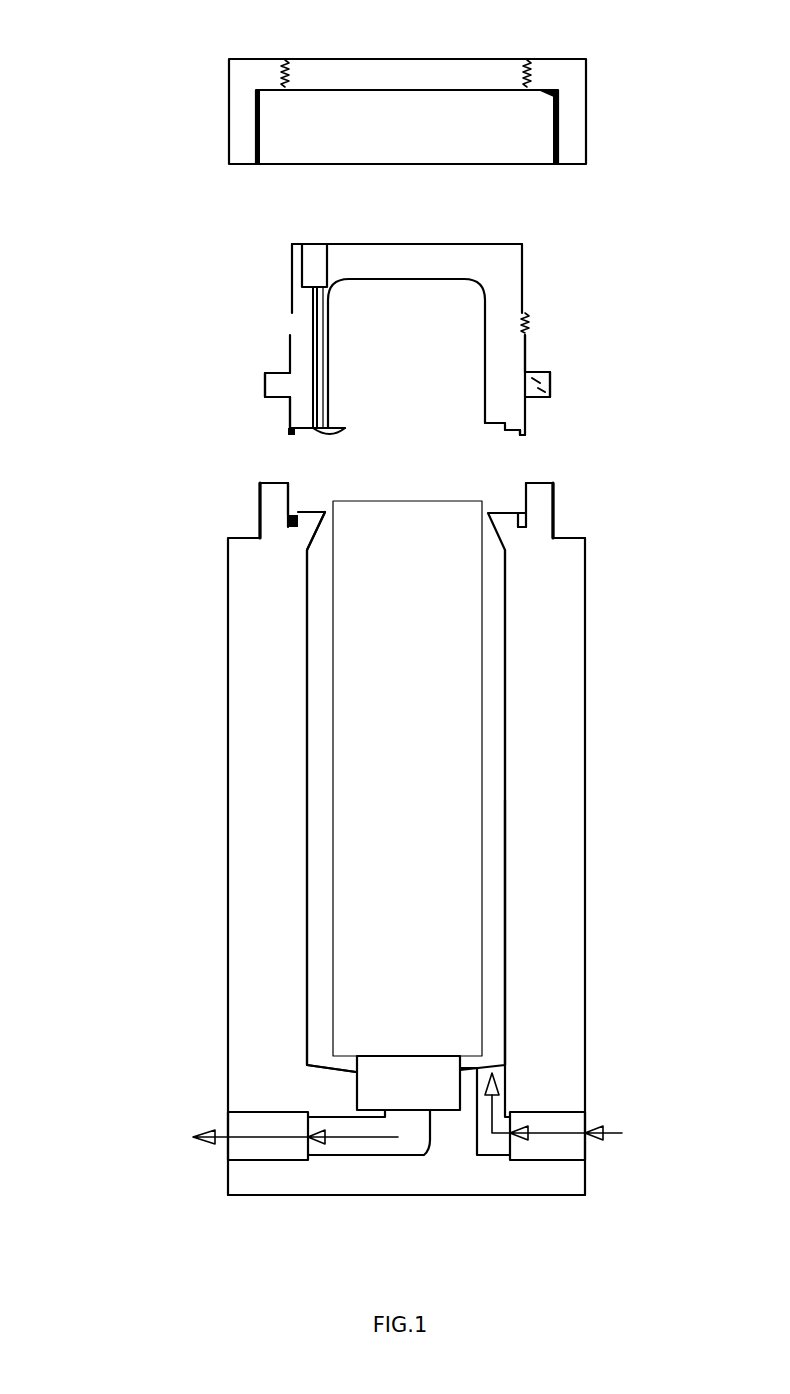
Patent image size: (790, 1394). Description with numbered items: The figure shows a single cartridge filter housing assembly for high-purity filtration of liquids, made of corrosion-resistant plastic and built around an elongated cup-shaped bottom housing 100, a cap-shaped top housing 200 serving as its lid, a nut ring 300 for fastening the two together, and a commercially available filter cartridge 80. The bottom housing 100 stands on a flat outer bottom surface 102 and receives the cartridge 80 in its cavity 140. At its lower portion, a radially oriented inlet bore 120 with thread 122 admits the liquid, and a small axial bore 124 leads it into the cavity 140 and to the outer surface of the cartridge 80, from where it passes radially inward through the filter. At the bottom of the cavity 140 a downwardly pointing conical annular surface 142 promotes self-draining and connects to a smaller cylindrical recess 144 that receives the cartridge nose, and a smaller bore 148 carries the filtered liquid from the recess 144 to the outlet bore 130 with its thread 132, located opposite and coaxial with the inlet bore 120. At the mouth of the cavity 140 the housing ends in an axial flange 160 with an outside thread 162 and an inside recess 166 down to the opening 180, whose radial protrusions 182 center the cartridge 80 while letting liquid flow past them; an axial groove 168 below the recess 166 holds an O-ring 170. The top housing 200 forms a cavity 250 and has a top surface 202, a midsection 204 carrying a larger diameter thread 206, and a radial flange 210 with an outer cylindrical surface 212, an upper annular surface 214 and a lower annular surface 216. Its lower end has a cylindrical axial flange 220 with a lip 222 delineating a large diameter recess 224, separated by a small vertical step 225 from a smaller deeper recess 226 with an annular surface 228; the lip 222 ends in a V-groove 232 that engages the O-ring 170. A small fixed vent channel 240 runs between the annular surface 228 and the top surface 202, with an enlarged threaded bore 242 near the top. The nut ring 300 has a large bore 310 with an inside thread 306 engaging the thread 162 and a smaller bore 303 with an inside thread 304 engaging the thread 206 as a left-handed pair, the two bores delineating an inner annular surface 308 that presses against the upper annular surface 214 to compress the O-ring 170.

The bottom housing 100 is at (265, 823).
The flat outer bottom surface 102 is at (485, 1195).
The filter cartridge 80 is at (455, 930).
The inlet bore 120 is at (578, 1123).
The thread 122 is at (565, 1158).
The axial bore 124 is at (502, 1098).
The outlet bore 130 is at (238, 1127).
The thread 132 is at (243, 1157).
The cavity 140 is at (490, 985).
The conical annular surface 142 is at (320, 1068).
The recess 144 is at (365, 1098).
The bore 148 is at (412, 1145).
The axial flange 160 is at (540, 483).
The outside thread 162 is at (556, 512).
The inside recess 166 is at (516, 500).
The axial groove 168 is at (290, 514).
The O-ring 170 is at (295, 515).
The opening 180 is at (429, 525).
The radial protrusions 182 is at (313, 520).
The top housing 200 is at (386, 258).
The top surface 202 is at (425, 243).
The midsection 204 is at (527, 340).
The thread 206 is at (527, 312).
The radial flange 210 is at (530, 372).
The outer cylindrical surface 212 is at (548, 384).
The upper annular surface 214 is at (538, 380).
The lower annular surface 216 is at (550, 388).
The axial flange 220 is at (288, 405).
The lip 222 is at (290, 427).
The recess 224 is at (520, 436).
The vertical step 225 is at (340, 436).
The recess 226 is at (493, 425).
The annular surface 228 is at (346, 415).
The V-groove 232 is at (290, 432).
The vent channel 240 is at (313, 315).
The threaded bore 242 is at (315, 262).
The cavity 250 is at (427, 338).
The nut ring 300 is at (575, 155).
The bore 303 is at (387, 86).
The inside axial thread 304 is at (285, 76).
The inside thread 306 is at (255, 135).
The inner annular surface 308 is at (560, 97).
The bore 310 is at (424, 143).